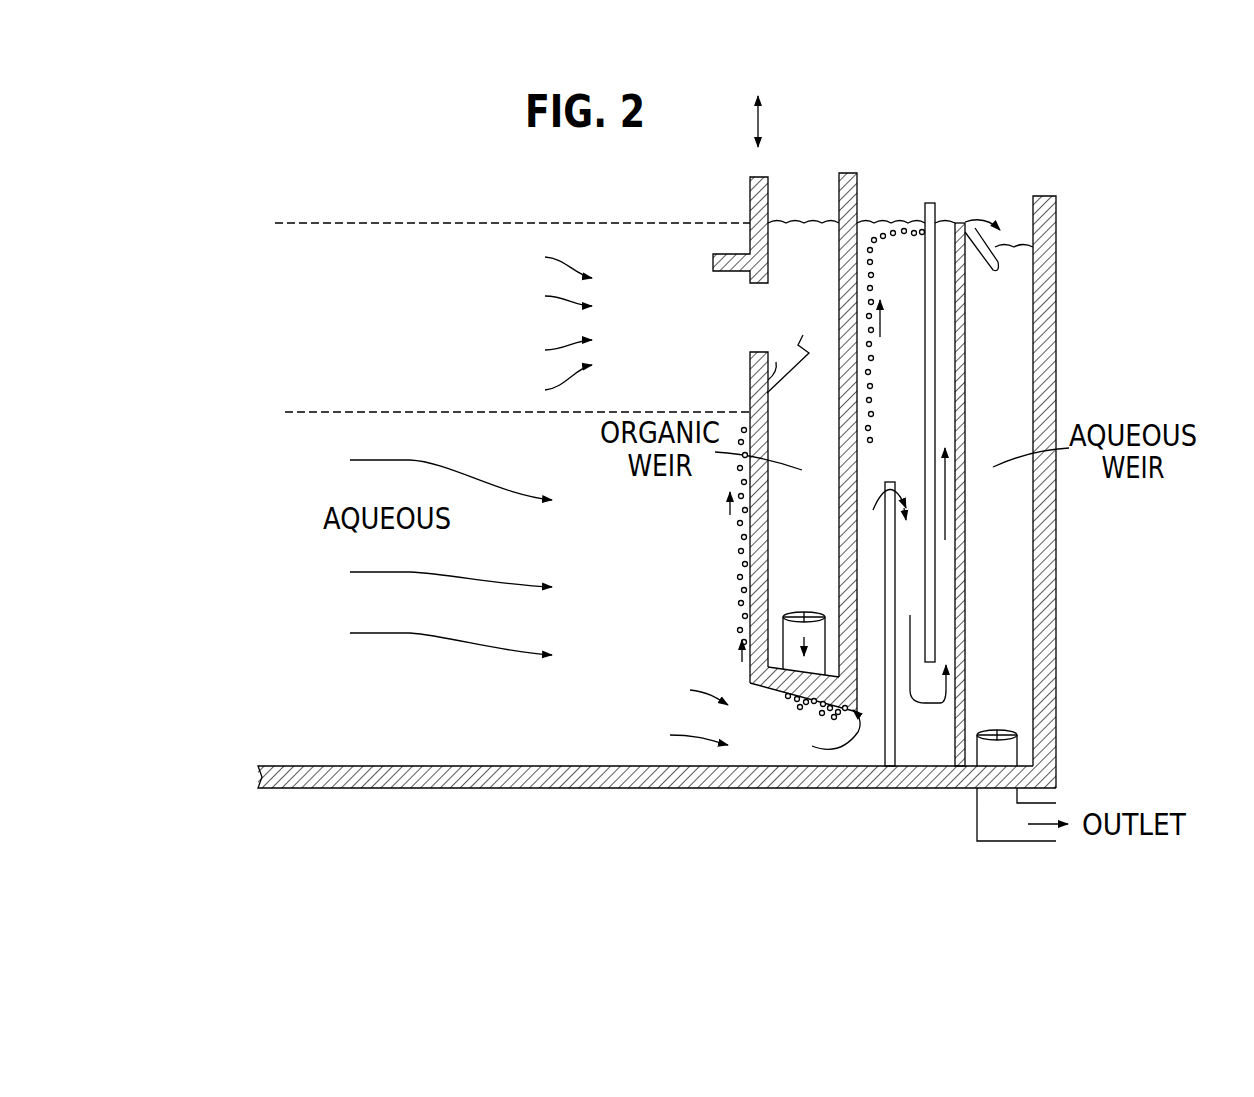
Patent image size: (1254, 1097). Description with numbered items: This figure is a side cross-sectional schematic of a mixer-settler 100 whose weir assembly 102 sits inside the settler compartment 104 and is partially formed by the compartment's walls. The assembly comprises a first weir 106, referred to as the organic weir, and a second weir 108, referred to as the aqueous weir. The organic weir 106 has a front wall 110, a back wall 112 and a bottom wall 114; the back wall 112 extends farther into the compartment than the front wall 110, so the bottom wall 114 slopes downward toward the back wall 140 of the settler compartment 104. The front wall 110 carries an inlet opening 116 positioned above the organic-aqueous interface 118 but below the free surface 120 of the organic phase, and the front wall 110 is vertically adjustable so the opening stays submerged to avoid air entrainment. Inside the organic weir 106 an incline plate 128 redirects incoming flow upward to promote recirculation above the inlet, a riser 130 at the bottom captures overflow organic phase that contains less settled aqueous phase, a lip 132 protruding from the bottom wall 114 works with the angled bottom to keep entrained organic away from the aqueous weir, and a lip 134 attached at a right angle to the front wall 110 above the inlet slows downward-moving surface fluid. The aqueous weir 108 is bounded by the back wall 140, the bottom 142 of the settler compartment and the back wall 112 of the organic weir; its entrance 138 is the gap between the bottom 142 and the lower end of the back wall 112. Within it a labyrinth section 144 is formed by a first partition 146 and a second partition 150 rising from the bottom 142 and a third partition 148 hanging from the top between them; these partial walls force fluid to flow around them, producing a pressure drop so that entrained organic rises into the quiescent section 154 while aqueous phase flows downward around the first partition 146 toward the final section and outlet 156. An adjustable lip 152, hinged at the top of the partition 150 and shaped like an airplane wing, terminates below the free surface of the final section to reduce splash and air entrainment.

The mixer-settler 100 is at (1052, 148).
The weir assembly 102 is at (842, 158).
The settler compartment 104 is at (292, 285).
The first weir 106 is at (802, 530).
The second weir 108 is at (1006, 649).
The front wall 110 is at (745, 593).
The back wall 112 is at (857, 178).
The bottom wall 114 is at (775, 690).
The inlet opening 116 is at (738, 316).
The organic-aqueous interface 118 is at (292, 413).
The free surface 120 is at (355, 221).
The incline plate 128 is at (798, 344).
The riser 130 is at (795, 614).
The lip 132 is at (776, 378).
The lip 134 is at (716, 252).
The entrance 138 is at (807, 727).
The back wall 140 is at (1057, 722).
The bottom 142 is at (460, 790).
The labyrinth section 144 is at (905, 435).
The first partition 146 is at (900, 740).
The third partition 148 is at (935, 650).
The second partition 150 is at (960, 563).
The adjustable lip 152 is at (997, 265).
The quiescent section 154 is at (898, 285).
The outlet 156 is at (965, 345).